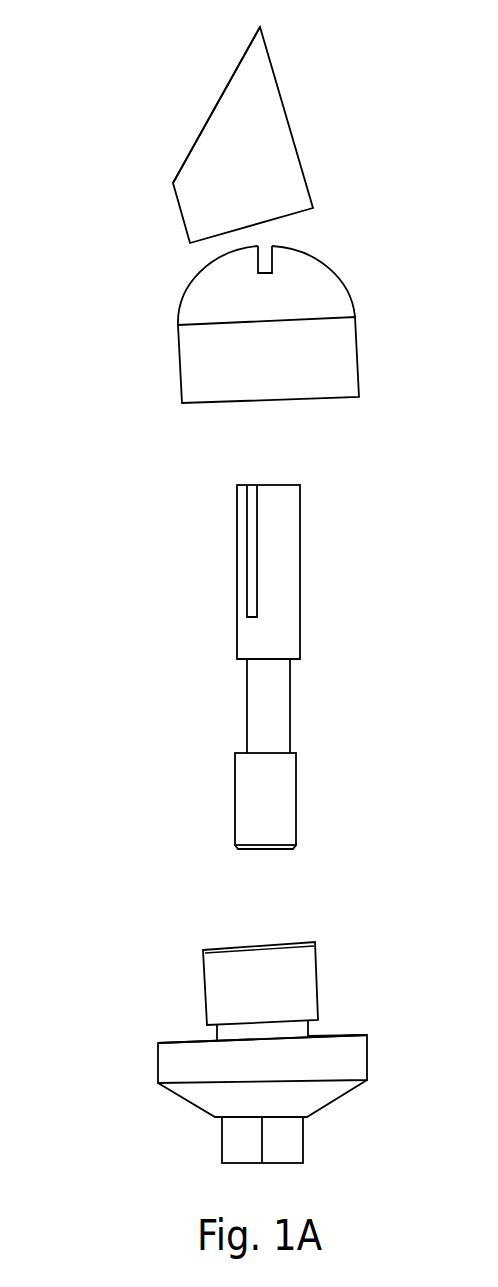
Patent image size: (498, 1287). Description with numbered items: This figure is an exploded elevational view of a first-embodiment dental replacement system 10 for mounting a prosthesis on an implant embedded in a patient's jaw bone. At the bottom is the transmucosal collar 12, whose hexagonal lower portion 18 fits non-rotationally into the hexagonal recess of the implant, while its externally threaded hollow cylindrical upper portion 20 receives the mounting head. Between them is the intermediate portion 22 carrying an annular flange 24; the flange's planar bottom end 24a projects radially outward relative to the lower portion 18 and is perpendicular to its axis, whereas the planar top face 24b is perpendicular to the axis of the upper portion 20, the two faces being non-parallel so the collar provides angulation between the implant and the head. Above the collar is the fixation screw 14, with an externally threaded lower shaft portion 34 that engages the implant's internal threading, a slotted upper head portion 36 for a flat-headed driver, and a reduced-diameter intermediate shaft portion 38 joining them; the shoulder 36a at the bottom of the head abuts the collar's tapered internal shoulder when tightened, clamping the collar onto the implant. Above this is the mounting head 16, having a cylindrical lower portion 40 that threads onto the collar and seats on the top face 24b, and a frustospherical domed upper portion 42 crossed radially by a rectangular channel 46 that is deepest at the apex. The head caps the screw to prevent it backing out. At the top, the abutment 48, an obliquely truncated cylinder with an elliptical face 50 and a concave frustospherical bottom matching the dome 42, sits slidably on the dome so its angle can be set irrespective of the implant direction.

The dental replacement system 10 is at (93, 93).
The transmucosal collar 12 is at (162, 982).
The fixation screw 14 is at (180, 603).
The mounting head 16 is at (162, 372).
The lower portion 18 is at (225, 1148).
The upper portion 20 is at (323, 970).
The intermediate portion 22 is at (370, 1045).
The annular flange 24 is at (370, 1063).
The planar bottom end 24a is at (345, 1085).
The planar top face 24b is at (325, 1033).
The threaded lower shaft portion 34 is at (285, 813).
The upper head portion 36 is at (287, 570).
The shoulder 36a is at (295, 662).
The intermediate shaft portion 38 is at (280, 735).
The cylindrical lower portion 40 is at (348, 368).
The domed upper portion 42 is at (325, 295).
The channel 46 is at (266, 263).
The abutment 48 is at (297, 98).
The elliptical face 50 is at (212, 111).